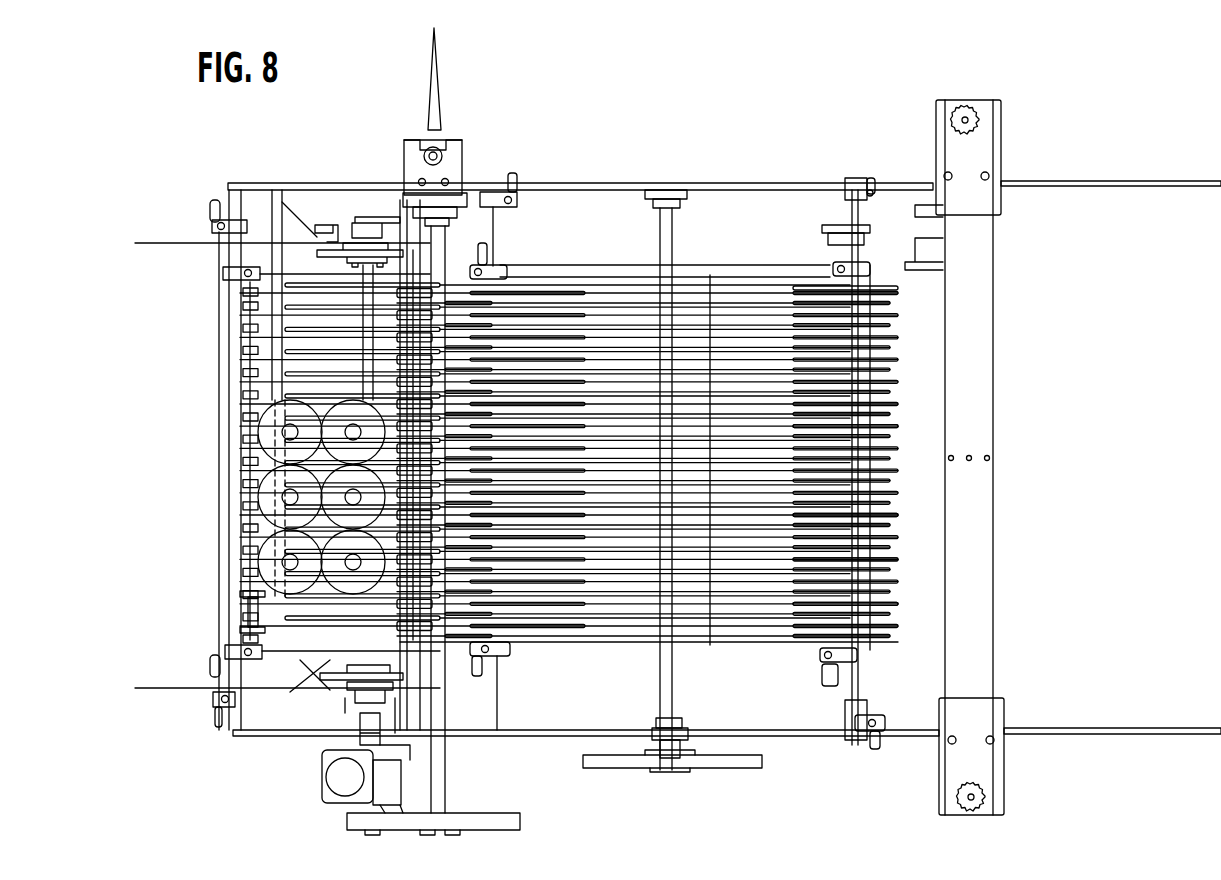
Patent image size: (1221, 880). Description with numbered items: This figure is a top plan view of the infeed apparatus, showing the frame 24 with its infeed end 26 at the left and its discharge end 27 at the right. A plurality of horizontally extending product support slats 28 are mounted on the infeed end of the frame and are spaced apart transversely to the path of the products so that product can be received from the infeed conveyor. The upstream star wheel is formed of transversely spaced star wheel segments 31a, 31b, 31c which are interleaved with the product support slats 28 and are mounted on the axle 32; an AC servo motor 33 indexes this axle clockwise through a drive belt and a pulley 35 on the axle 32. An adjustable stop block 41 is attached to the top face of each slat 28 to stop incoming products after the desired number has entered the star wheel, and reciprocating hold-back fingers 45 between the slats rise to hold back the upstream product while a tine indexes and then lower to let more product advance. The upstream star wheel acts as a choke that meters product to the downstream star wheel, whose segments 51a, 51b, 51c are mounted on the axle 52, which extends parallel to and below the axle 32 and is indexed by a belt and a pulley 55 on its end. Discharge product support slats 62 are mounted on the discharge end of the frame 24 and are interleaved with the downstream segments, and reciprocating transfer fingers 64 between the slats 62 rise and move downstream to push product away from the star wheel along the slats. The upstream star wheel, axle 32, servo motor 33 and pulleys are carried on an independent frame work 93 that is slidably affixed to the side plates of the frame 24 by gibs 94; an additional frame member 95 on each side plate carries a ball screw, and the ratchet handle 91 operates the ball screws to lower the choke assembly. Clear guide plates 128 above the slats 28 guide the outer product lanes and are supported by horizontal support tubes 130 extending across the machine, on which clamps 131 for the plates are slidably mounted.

The frame 24 is at (700, 190).
The infeed end 26 is at (218, 318).
The discharge end 27 is at (905, 610).
The product support slats 28 is at (240, 340).
The star wheel segment 31a is at (295, 625).
The star wheel segment 31b is at (295, 552).
The star wheel segment 31c is at (295, 500).
The axle 32 is at (500, 235).
The AC servo motor 33 is at (322, 775).
The pulley 35 is at (525, 818).
The adjustable stop block 41 is at (290, 470).
The hold-back fingers 45 is at (240, 592).
The star wheel segment 51a is at (895, 565).
The star wheel segment 51b is at (895, 520).
The star wheel segment 51c is at (895, 430).
The axle 52 is at (675, 230).
The pulley 55 is at (732, 770).
The product support slats 62 is at (905, 353).
The transfer fingers 64 is at (827, 332).
The ratchet handle 91 is at (440, 78).
The frame work 93 is at (470, 205).
The gibs 94 is at (412, 185).
The additional frame member 95 is at (400, 150).
The guide plates 128 is at (640, 183).
The horizontal support tubes 130 is at (595, 265).
The clamps 131 is at (225, 275).